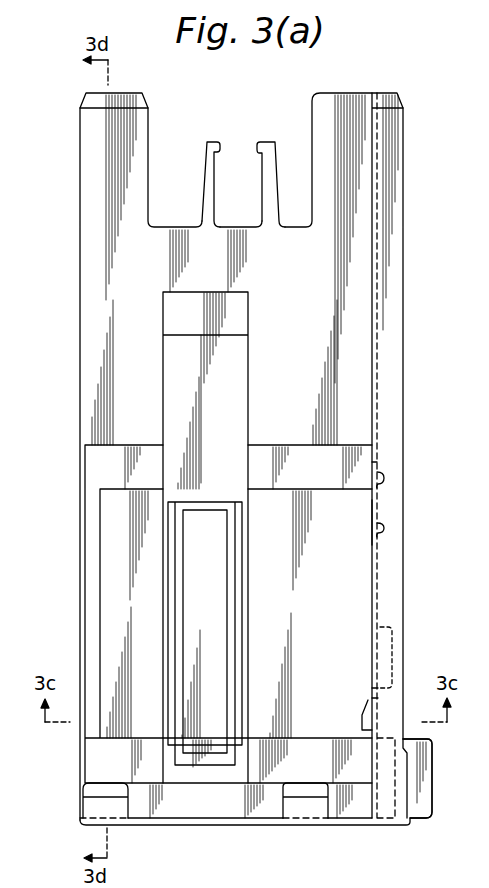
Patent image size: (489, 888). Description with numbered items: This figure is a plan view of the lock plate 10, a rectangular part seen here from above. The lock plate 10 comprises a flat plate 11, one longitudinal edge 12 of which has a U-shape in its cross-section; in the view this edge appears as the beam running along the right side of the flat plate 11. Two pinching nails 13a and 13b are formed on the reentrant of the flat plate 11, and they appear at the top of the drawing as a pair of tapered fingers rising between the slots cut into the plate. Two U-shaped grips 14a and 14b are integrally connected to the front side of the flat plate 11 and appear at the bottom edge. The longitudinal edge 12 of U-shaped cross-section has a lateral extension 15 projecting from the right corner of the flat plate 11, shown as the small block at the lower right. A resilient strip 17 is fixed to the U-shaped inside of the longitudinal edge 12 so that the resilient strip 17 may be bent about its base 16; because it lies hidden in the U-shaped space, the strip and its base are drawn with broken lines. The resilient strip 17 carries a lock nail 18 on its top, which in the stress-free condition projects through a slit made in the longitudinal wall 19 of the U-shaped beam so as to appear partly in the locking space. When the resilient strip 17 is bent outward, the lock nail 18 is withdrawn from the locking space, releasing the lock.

The lock plate 10 is at (405, 103).
The flat plate 11 is at (95, 314).
The longitudinal edge 12 is at (390, 336).
The pinching nail 13a is at (207, 142).
The pinching nail 13b is at (266, 142).
The U-shaped grip 14a is at (92, 808).
The U-shaped grip 14b is at (305, 805).
The lateral extension 15 is at (426, 803).
The base 16 is at (382, 510).
The resilient strip 17 is at (388, 652).
The lock nail 18 is at (364, 716).
The longitudinal wall 19 is at (372, 522).